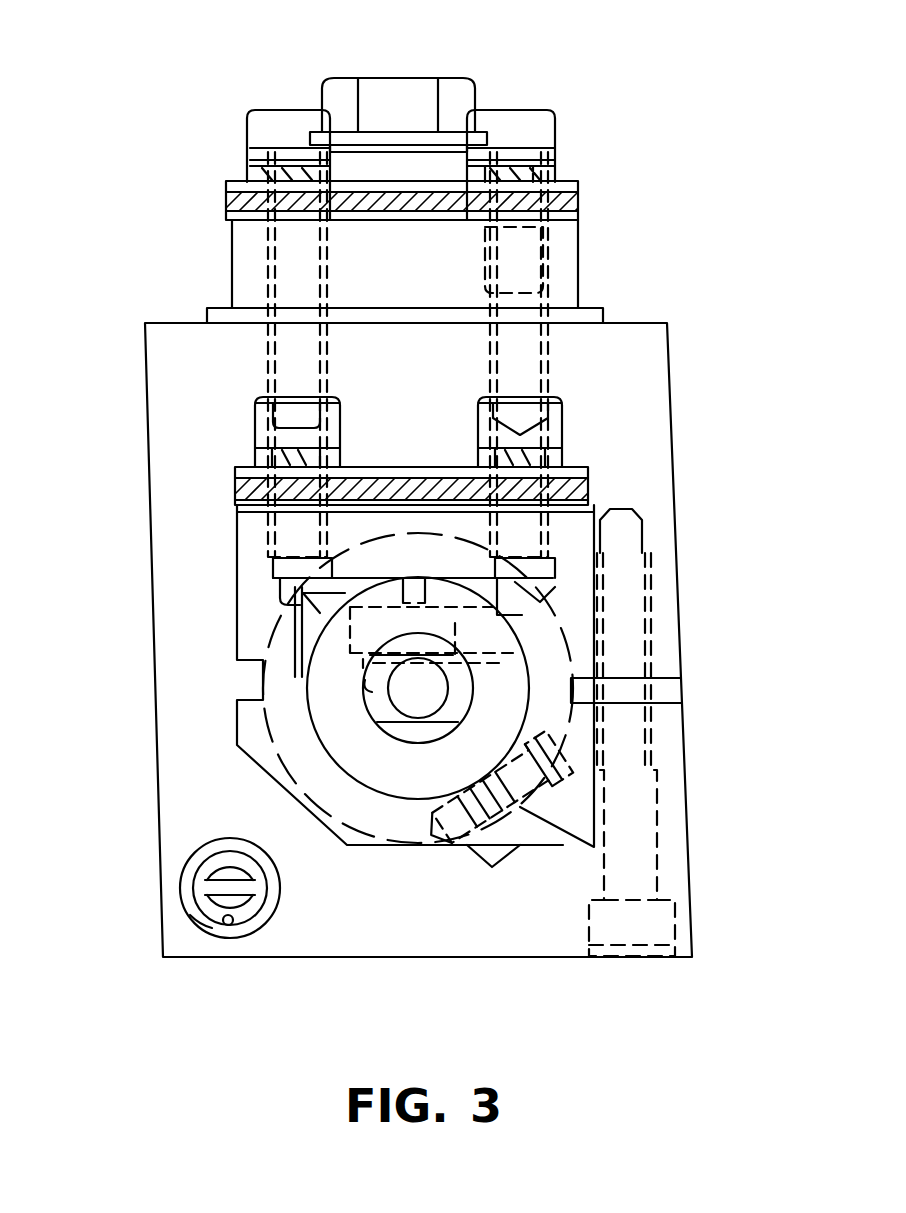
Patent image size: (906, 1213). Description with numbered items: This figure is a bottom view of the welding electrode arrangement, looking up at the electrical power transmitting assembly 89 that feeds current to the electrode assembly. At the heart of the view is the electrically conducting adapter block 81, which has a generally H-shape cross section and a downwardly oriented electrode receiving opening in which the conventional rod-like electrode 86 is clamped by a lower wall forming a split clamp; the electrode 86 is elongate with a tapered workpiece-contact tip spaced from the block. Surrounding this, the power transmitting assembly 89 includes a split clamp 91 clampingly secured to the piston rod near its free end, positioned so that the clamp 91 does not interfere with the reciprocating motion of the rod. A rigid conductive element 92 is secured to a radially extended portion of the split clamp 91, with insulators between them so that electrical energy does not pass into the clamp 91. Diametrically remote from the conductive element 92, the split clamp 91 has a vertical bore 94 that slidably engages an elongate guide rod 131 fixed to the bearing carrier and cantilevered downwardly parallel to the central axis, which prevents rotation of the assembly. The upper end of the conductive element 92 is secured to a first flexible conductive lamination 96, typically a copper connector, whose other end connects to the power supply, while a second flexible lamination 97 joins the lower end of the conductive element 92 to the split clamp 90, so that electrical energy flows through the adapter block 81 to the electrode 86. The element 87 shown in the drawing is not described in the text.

The adapter block 81 is at (345, 728).
The electrode 86 is at (373, 687).
The pin 87 is at (418, 700).
The electrical power transmitting assembly 89 is at (620, 278).
The split clamp 90 is at (250, 548).
The split clamp 91 is at (345, 913).
The conductive element 92 is at (243, 270).
The vertical bore 94 is at (212, 930).
The first flexible electrically conductive cable or lamination 96 is at (415, 105).
The second flexible electrically conducting cable or lamination 97 is at (590, 489).
The guide rod 131 is at (229, 925).